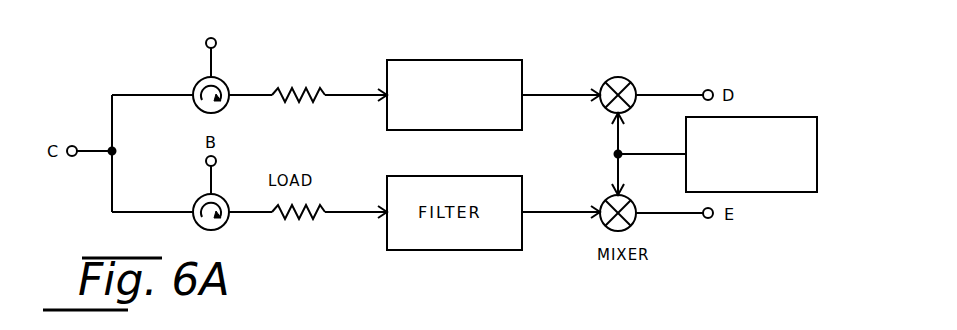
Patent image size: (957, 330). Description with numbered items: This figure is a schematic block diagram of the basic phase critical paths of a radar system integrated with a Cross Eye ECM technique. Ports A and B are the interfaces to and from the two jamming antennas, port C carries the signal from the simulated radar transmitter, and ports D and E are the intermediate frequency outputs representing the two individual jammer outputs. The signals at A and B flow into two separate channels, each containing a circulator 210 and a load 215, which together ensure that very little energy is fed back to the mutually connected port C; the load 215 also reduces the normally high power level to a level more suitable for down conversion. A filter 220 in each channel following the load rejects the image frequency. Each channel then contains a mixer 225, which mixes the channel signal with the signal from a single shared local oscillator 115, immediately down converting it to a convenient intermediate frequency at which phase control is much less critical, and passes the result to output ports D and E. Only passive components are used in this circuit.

The circulator 210 is at (197, 82).
The load 215 is at (290, 104).
The filter 220 is at (425, 60).
The mixer 225 is at (600, 88).
The local oscillator 115 is at (778, 117).